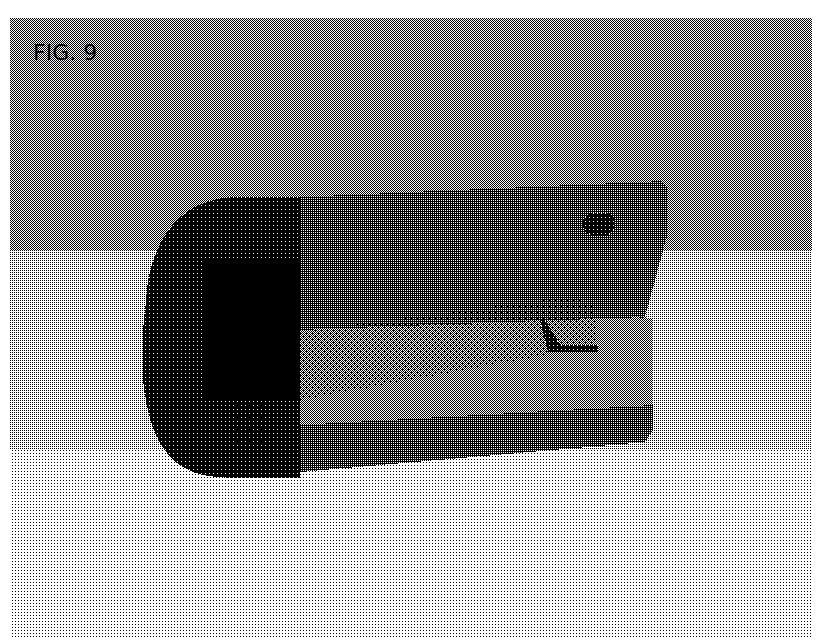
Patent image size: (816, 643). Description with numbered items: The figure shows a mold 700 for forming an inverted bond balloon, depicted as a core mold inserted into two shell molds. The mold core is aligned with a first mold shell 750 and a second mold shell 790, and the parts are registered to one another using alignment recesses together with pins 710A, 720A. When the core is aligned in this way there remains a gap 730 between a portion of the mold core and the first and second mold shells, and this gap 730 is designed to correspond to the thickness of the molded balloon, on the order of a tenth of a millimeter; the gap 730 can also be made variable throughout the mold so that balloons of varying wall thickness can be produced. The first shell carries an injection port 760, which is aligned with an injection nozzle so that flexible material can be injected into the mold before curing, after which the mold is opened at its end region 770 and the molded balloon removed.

The connector assembly 700 is at (391, 334).
The gap 730 is at (484, 228).
The first mold shell 750 is at (581, 169).
The end wall 770 is at (670, 286).
The pin 710A is at (689, 249).
The pin 720A is at (185, 337).
The second mold shell 790 is at (154, 434).
The injection port 760 is at (425, 441).